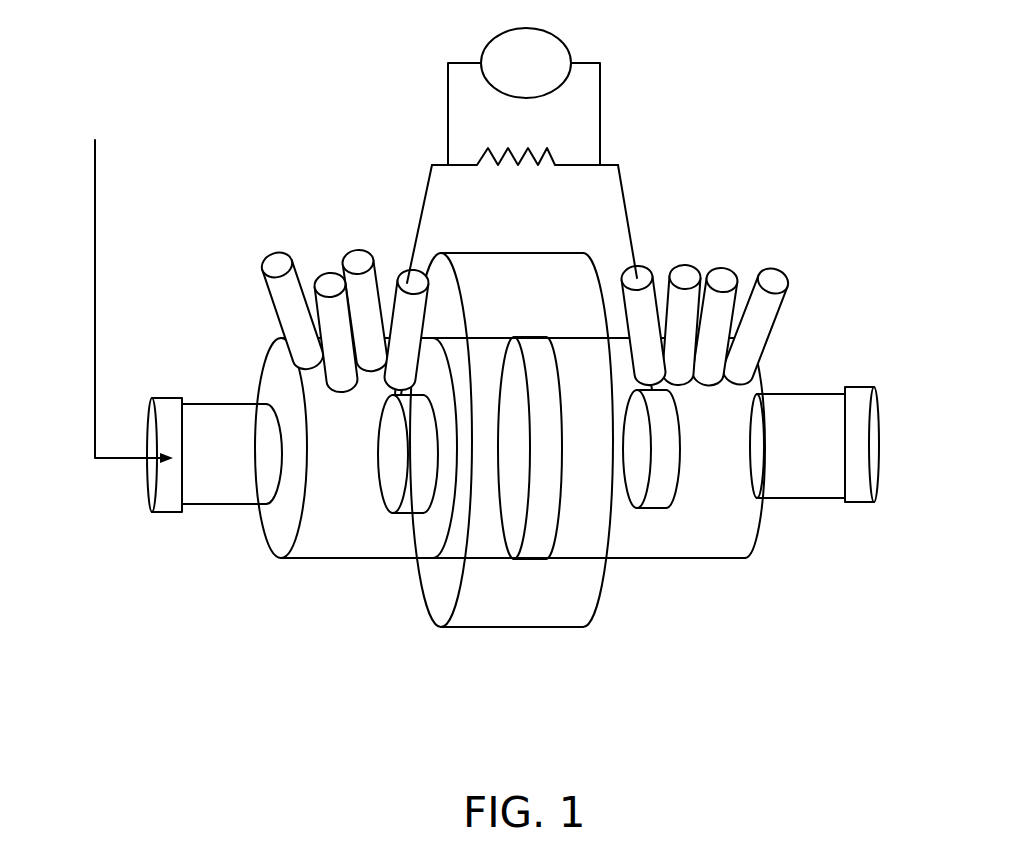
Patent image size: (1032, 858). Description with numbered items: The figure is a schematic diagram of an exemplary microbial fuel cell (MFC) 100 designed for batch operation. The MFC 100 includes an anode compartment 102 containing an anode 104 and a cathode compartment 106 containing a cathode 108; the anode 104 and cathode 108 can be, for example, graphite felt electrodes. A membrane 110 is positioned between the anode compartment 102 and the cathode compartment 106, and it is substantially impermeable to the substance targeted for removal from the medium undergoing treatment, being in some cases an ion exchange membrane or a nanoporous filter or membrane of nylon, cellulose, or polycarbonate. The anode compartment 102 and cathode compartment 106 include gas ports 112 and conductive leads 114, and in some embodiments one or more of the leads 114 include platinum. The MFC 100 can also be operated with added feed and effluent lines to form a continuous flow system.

The microbial fuel cell 100 is at (468, 353).
The anode compartment 102 is at (309, 548).
The anode 104 is at (378, 487).
The cathode compartment 106 is at (740, 508).
The cathode 108 is at (675, 482).
The membrane 110 is at (532, 557).
The gas ports 112 is at (272, 254).
The conductive leads 114 is at (406, 276).